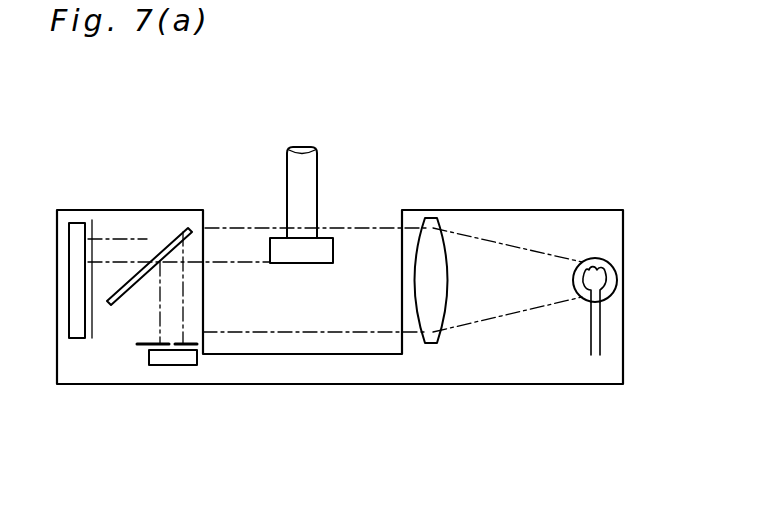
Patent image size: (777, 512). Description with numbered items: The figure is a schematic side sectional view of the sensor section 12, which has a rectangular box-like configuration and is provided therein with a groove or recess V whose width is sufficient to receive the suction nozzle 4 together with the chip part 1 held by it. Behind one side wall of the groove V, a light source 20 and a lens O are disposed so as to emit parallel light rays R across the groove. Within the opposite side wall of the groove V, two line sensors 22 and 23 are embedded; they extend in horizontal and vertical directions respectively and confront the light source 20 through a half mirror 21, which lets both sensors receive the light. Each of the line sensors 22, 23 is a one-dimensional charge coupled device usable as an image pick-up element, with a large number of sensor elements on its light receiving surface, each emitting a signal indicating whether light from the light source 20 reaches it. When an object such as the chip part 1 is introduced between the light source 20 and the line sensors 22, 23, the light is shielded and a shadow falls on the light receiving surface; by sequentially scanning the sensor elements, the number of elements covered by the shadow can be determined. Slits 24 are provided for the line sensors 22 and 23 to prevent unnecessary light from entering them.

The sensor section 12 is at (578, 175).
The line sensor 22 is at (75, 327).
The slits 24 is at (92, 322).
The line sensor 23 is at (178, 358).
The half mirror 21 is at (188, 228).
The groove V is at (245, 280).
The suction nozzle 4 is at (302, 168).
The chip part 1 is at (318, 250).
The parallel light rays R is at (295, 334).
The lens O is at (432, 302).
The light source 20 is at (585, 260).